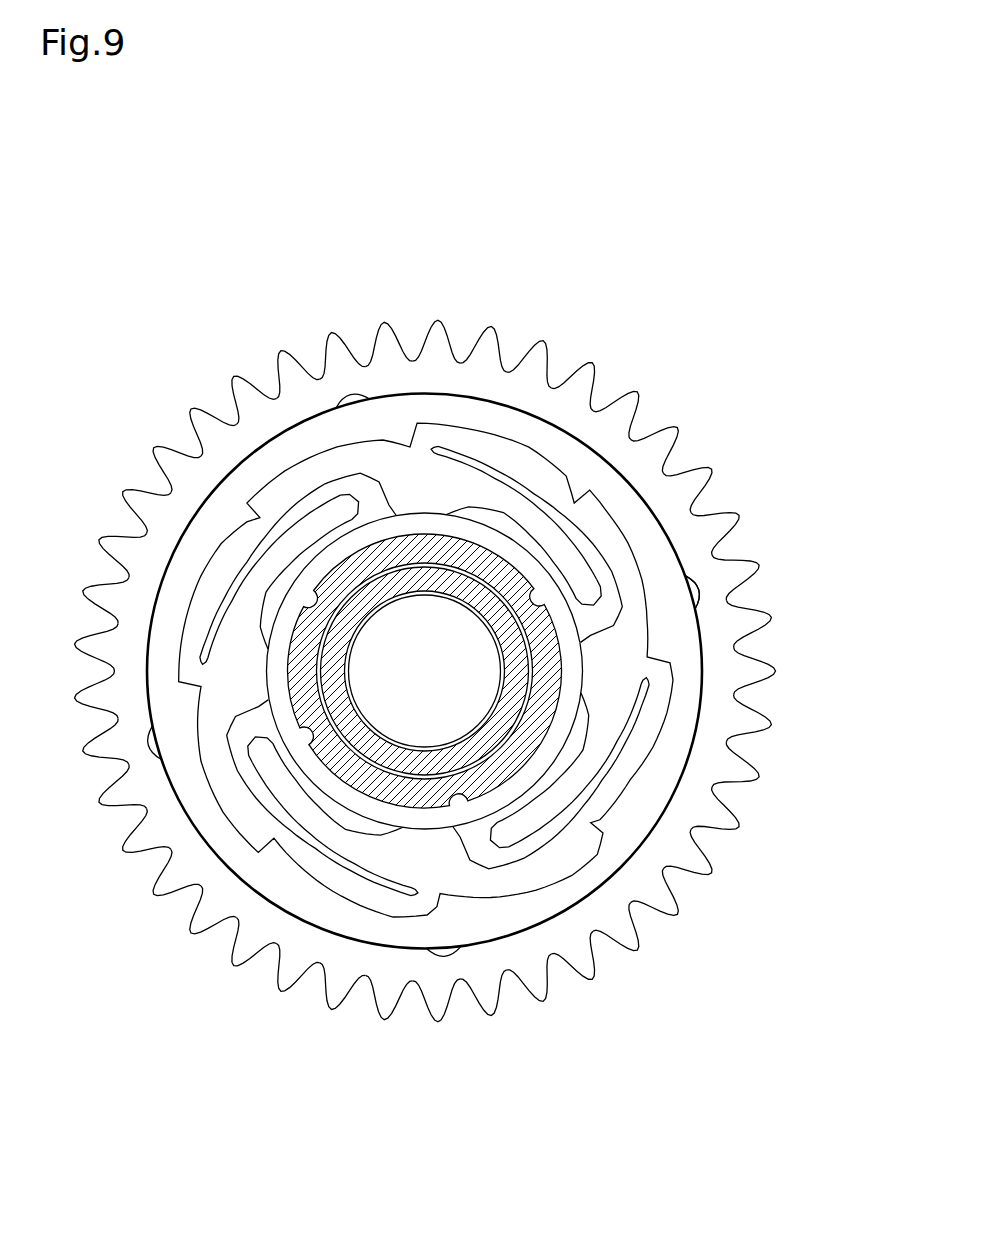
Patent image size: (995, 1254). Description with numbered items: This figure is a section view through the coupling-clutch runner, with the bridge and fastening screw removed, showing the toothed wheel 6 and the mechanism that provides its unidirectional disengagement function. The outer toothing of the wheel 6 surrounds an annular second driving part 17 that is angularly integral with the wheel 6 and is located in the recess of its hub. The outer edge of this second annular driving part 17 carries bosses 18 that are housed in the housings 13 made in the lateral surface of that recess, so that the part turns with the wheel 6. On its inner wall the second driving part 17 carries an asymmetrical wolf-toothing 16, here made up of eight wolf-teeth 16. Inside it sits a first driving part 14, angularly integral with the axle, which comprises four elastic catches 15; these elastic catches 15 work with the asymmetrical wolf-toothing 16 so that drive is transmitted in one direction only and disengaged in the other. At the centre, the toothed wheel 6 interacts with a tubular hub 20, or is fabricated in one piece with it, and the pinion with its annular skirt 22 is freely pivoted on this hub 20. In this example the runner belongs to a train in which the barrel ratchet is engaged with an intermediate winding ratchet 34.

The wheel 6 is at (682, 521).
The housings 13 is at (706, 590).
The first driving part 14 is at (575, 678).
The elastic catches 15 is at (450, 452).
The asymmetrical wolf-toothing 16 is at (190, 690).
The second annular driving part 17 is at (560, 455).
The bosses 18 is at (688, 595).
The tubular hub 20 is at (460, 748).
The annular skirt 22 is at (480, 563).
The intermediate winding ratchet 34 is at (429, 684).